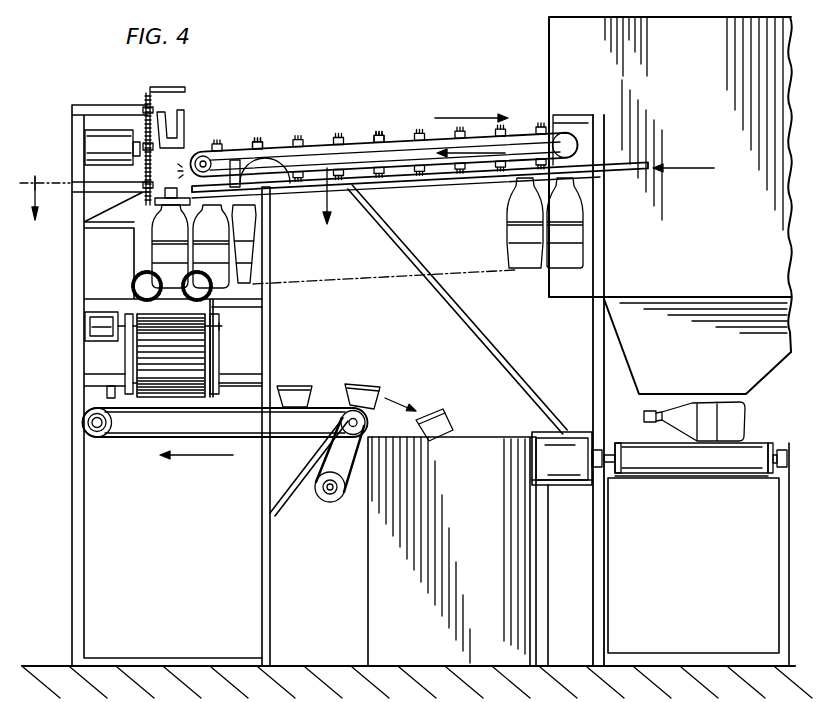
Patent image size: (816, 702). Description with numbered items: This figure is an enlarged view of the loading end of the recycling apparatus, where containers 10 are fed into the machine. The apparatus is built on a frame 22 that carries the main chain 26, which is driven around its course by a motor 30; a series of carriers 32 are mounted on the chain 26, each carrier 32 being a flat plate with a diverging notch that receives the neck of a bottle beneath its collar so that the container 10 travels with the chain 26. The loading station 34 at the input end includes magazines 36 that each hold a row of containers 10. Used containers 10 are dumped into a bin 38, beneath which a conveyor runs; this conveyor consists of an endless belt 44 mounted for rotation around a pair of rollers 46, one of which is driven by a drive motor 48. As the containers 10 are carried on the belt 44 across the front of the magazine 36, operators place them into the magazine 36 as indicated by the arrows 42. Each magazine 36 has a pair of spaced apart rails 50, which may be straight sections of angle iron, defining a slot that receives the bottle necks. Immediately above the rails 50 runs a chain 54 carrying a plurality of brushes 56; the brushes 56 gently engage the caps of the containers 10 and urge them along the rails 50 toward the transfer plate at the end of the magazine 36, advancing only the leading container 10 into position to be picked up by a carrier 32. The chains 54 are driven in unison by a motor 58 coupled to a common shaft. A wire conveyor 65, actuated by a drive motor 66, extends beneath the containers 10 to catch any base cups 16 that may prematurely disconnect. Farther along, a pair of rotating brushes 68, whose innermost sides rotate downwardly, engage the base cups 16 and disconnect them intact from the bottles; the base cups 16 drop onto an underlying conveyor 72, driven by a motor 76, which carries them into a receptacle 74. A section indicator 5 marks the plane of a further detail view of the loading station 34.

The section line 5- 5 is at (267, 226).
The container 10 is at (628, 412).
The base cup 16 is at (432, 418).
The frame 22 is at (68, 103).
The chain 26 is at (146, 97).
The motor 30 is at (95, 143).
The carrier 32 is at (186, 123).
The loading station 34 is at (436, 58).
The magazine 36 is at (611, 160).
The bin 38 is at (548, 44).
The arrows 42 is at (700, 167).
The endless belt 44 is at (695, 478).
The rollers 46 is at (610, 475).
The drive motor 48 is at (566, 472).
The rails 50 is at (632, 165).
The chain 54 is at (397, 140).
The brushes 56 is at (376, 135).
The motor 58 is at (567, 136).
The wire conveyor 65 is at (162, 398).
The drive motor 66 is at (85, 328).
The rotating brushes 68 is at (143, 275).
The conveyor 72 is at (154, 440).
The receptacle 74 is at (370, 584).
The motor 76 is at (330, 503).